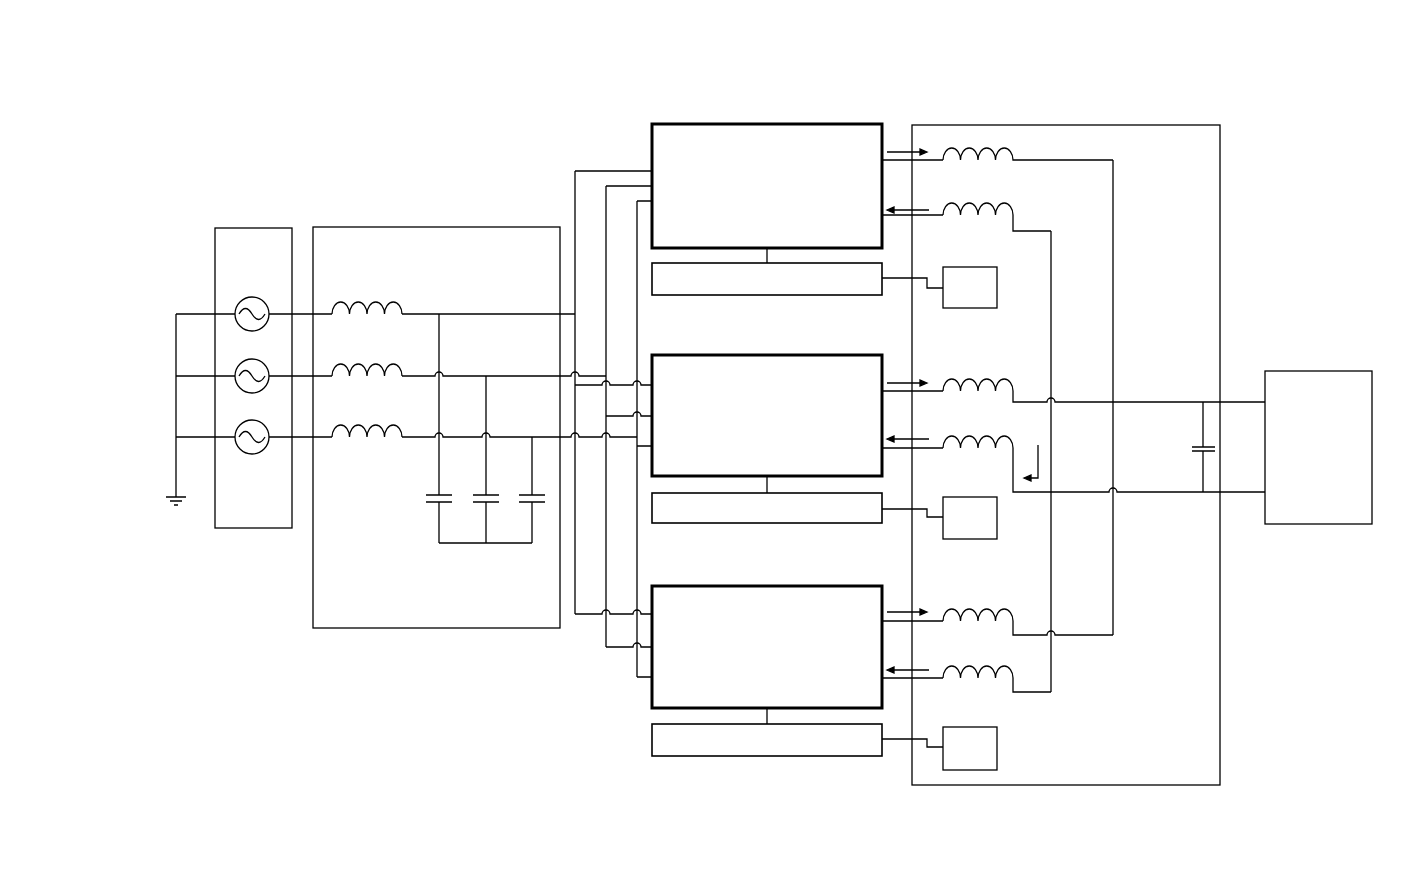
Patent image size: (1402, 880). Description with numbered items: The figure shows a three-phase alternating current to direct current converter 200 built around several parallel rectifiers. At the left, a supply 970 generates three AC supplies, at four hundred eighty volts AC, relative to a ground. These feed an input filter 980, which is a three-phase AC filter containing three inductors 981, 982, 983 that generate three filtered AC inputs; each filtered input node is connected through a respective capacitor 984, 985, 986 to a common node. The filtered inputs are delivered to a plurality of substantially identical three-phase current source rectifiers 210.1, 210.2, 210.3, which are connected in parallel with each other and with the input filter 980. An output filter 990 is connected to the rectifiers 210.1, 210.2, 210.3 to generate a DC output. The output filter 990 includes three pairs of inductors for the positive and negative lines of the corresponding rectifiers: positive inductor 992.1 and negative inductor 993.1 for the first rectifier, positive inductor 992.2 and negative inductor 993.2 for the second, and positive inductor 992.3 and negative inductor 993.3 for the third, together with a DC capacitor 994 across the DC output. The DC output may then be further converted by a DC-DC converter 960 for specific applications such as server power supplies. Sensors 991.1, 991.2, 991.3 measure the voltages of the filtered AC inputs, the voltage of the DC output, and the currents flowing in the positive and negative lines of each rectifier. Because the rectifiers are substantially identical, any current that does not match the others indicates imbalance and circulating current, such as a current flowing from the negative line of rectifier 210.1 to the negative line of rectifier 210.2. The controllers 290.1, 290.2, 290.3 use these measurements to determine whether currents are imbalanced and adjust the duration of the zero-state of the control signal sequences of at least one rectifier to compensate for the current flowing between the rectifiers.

The three-phase AC to DC converter 200 is at (754, 415).
The supply 970 is at (225, 383).
The input filter 980 is at (475, 427).
The inductor 981 is at (453, 292).
The inductor 982 is at (469, 353).
The inductor 983 is at (484, 414).
The capacitor 984 is at (414, 428).
The capacitor 985 is at (485, 459).
The capacitor 986 is at (527, 490).
The three-phase current source rectifier 210.1 is at (767, 193).
The three-phase current source rectifier 210.2 is at (767, 424).
The three-phase current source rectifier 210.3 is at (767, 655).
The controller 290.1 is at (797, 279).
The controller 290.2 is at (797, 508).
The controller 290.3 is at (797, 740).
The output filter 990 is at (1066, 455).
The positive inductor 992.1 is at (1023, 171).
The negative inductor 993.1 is at (992, 229).
The sensor 991.1 is at (970, 287).
The positive inductor 992.2 is at (1068, 402).
The negative inductor 993.2 is at (1068, 464).
The sensor 991.2 is at (970, 518).
The positive inductor 992.3 is at (1023, 632).
The negative inductor 993.3 is at (992, 692).
The sensor 991.3 is at (970, 748).
The DC capacitor 994 is at (1176, 447).
The DC-DC converter 960 is at (1318, 447).